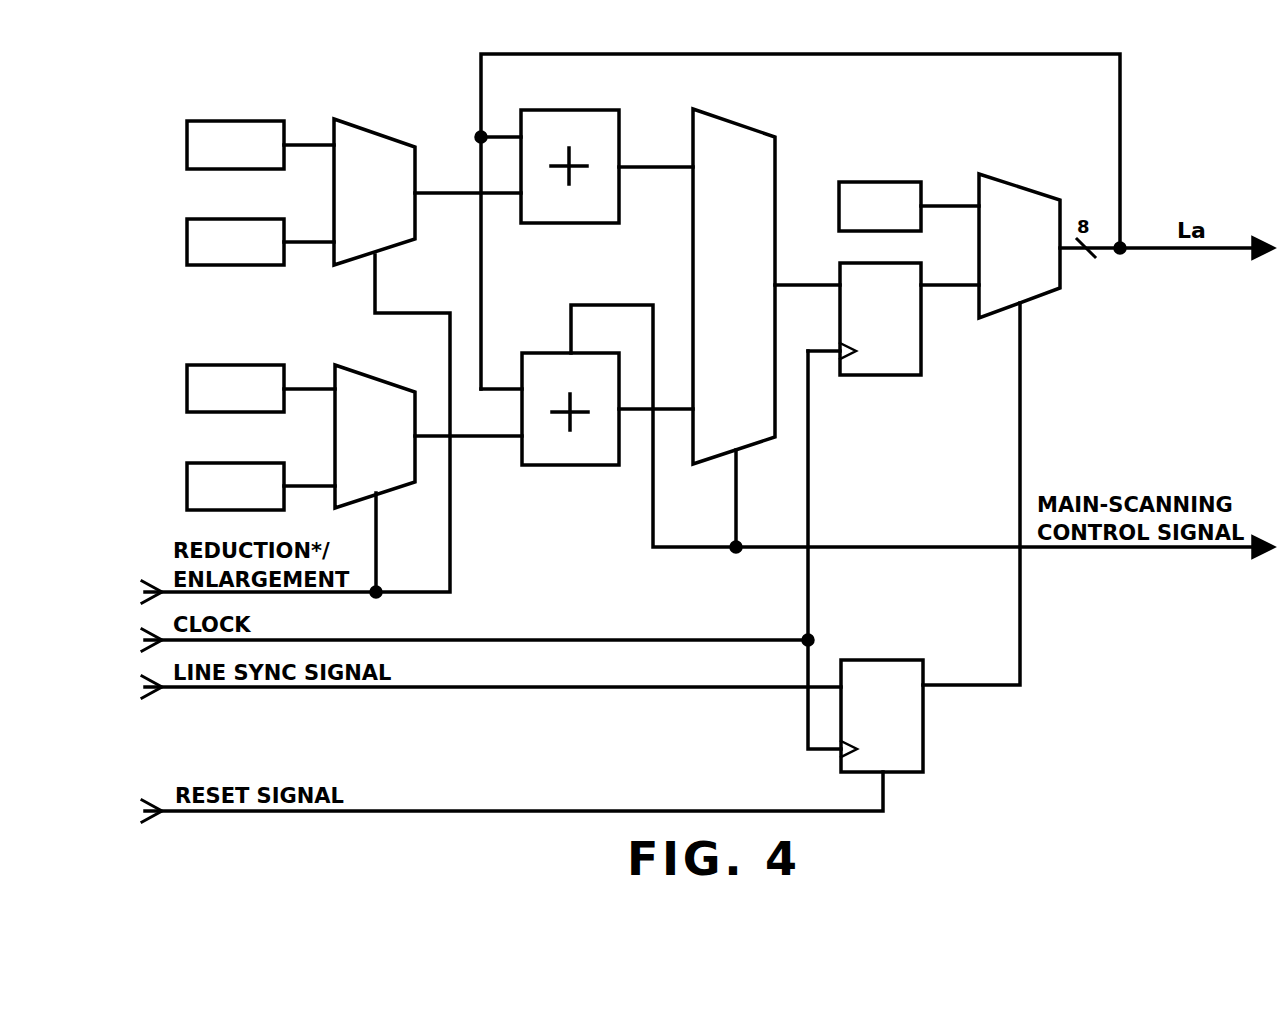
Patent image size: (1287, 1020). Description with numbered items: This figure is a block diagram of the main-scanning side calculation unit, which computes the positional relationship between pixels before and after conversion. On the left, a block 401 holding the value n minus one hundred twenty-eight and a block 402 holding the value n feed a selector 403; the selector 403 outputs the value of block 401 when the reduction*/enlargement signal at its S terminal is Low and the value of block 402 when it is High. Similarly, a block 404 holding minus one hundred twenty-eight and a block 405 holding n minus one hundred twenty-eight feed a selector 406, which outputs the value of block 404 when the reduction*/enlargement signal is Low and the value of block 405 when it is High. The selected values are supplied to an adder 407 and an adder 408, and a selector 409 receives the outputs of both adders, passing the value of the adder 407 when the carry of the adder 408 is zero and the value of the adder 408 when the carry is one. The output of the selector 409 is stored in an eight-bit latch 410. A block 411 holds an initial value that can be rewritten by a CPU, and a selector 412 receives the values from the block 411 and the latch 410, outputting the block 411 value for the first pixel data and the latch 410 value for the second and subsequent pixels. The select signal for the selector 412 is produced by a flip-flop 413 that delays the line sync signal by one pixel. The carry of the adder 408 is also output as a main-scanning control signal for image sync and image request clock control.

The block having value n−128 401 is at (232, 121).
The block having value n 402 is at (226, 219).
The selector 403 is at (366, 118).
The block having value −128 404 is at (228, 365).
The block having value n−128 405 is at (236, 463).
The selector 406 is at (360, 364).
The adder 407 is at (578, 110).
The adder 408 is at (538, 352).
The selector 409 is at (780, 166).
The 8-bit latch 410 is at (880, 377).
The block having initial value 411 is at (872, 182).
The selector 412 is at (1030, 174).
The flip-flop 413 is at (878, 660).